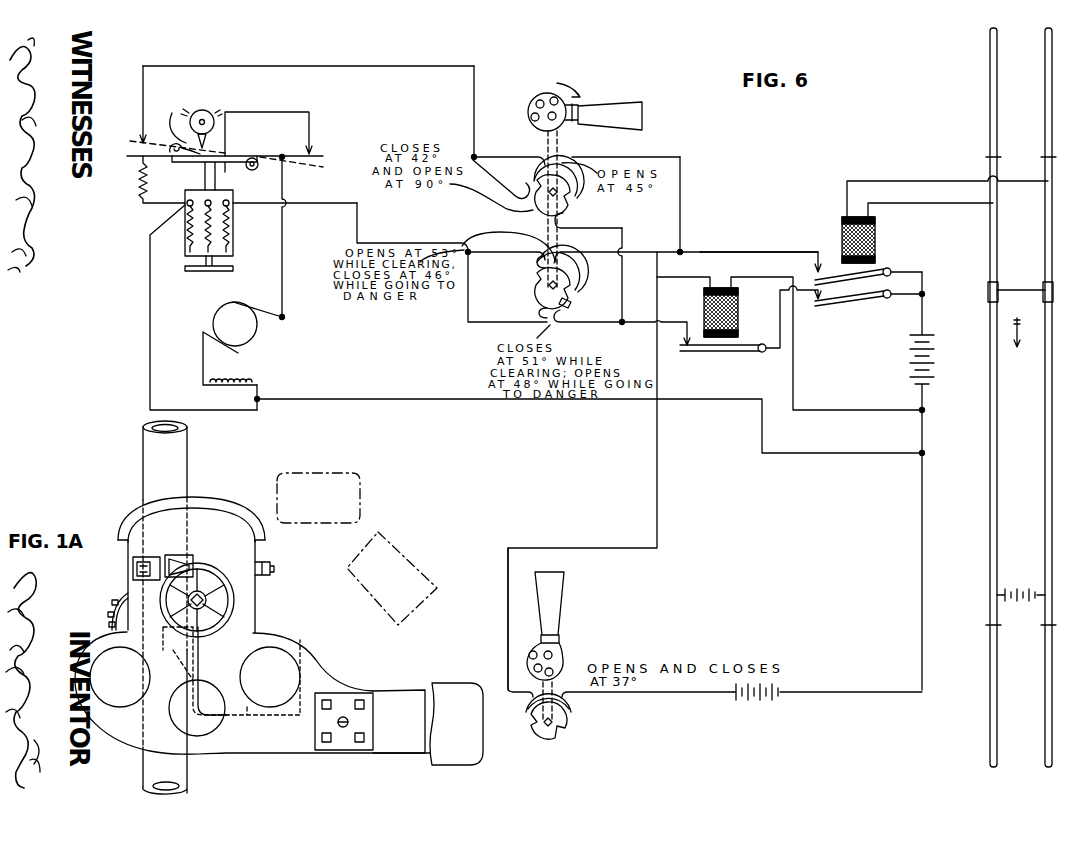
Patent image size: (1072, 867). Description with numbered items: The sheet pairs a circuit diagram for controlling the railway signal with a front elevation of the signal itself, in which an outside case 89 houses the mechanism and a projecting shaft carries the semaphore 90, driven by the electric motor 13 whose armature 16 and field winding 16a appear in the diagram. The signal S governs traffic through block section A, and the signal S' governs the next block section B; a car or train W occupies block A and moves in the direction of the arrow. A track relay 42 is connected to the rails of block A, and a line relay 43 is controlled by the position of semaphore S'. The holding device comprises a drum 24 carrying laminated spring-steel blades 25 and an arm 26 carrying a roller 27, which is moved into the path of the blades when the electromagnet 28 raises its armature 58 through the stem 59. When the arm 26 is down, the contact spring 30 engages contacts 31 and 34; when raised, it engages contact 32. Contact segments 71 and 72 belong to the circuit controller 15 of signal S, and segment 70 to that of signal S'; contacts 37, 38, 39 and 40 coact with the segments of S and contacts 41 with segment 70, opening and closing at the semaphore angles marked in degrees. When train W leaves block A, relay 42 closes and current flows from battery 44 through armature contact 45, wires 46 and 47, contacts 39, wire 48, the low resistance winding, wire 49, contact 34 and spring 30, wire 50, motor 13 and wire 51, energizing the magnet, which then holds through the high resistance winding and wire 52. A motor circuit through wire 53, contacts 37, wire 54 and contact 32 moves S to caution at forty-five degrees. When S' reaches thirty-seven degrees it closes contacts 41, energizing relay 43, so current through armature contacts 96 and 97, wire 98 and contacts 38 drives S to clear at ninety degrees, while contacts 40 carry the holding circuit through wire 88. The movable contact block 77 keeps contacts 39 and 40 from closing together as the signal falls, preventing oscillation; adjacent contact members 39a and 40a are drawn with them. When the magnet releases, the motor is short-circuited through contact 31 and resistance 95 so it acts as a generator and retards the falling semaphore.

In FIG. 6, the wire 54 is at (307, 95).
In FIG. 6, the contact 32 is at (138, 121).
In FIG. 6, the contact 34 is at (308, 152).
In FIG. 6, the contact 31 is at (137, 165).
In FIG. 6, the drum 24 is at (207, 112).
In FIG. 6, the blades 25 is at (190, 113).
In FIG. 6, the roller 27 is at (172, 113).
In FIG. 6, the contact spring 30 is at (170, 147).
In FIG. 6, the wire 49 is at (268, 134).
In FIG. 6, the arm 26 is at (185, 164).
In FIG. 6, the stem 59 is at (215, 170).
In FIG. 6, the resistance 95 is at (138, 194).
In FIG. 6, the electromagnet 28 is at (182, 230).
In FIG. 6, the armature 58 is at (205, 272).
In FIG. 6, the wire 50 is at (282, 264).
In FIG. 6, the armature 16 is at (248, 331).
In FIG. 6, the electric motor 13 is at (235, 358).
In FIG. 6, the winding 16a is at (226, 386).
In FIG. 6, the wire 52 is at (148, 300).
In FIG. 6, the wire 51 is at (589, 416).
In FIG. 6, the wire 48 is at (355, 234).
In FIG. 6, the signal S is at (585, 100).
In FIG. 6, the contacts 37 is at (555, 167).
In FIG. 6, the contact segment 71 is at (578, 200).
In FIG. 6, the circuit controller 15 is at (507, 196).
In FIG. 6, the contacts 38 is at (565, 217).
In FIG. 6, the wire 53 is at (681, 207).
In FIG. 6, the wire 98 is at (628, 242).
In FIG. 6, the wire 47 is at (690, 253).
In FIG. 6, the wire 46 is at (759, 243).
In FIG. 6, the contact 39a is at (562, 255).
In FIG. 6, the contacts 39 is at (540, 262).
In FIG. 6, the contact segment 72 is at (575, 284).
In FIG. 6, the contact block 77 is at (573, 304).
In FIG. 6, the contacts 40 is at (537, 312).
In FIG. 6, the contact 40a is at (563, 322).
In FIG. 6, the wire 88 is at (472, 308).
In FIG. 6, the line relay 43 is at (702, 306).
In FIG. 6, the armature contact 97 is at (717, 356).
In FIG. 6, the track relay 42 is at (876, 236).
In FIG. 6, the armature contact 45 is at (846, 290).
In FIG. 6, the armature contact 96 is at (871, 302).
In FIG. 6, the battery 44 is at (907, 481).
In FIG. 6, the signal S' is at (563, 626).
In FIG. 6, the contacts 41 is at (533, 703).
In FIG. 6, the contact segment 70 is at (530, 728).
In FIG. 6, the car or train W is at (1019, 289).
In FIG. 6, the block section A is at (1015, 406).
In FIG. 6, the block section B is at (1014, 658).
In FIG. 1A, the outside case 89 is at (214, 520).
In FIG. 1A, the signaling device 90 is at (380, 619).